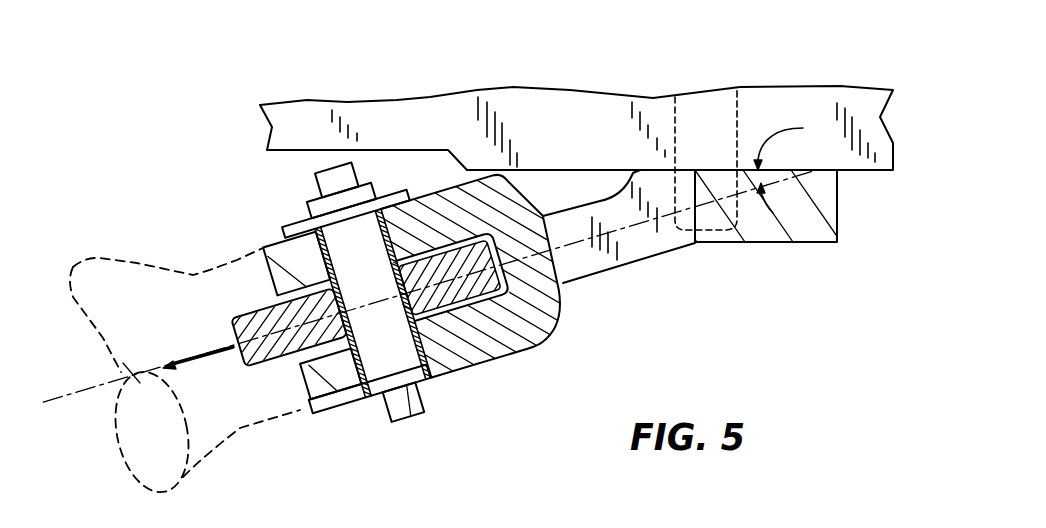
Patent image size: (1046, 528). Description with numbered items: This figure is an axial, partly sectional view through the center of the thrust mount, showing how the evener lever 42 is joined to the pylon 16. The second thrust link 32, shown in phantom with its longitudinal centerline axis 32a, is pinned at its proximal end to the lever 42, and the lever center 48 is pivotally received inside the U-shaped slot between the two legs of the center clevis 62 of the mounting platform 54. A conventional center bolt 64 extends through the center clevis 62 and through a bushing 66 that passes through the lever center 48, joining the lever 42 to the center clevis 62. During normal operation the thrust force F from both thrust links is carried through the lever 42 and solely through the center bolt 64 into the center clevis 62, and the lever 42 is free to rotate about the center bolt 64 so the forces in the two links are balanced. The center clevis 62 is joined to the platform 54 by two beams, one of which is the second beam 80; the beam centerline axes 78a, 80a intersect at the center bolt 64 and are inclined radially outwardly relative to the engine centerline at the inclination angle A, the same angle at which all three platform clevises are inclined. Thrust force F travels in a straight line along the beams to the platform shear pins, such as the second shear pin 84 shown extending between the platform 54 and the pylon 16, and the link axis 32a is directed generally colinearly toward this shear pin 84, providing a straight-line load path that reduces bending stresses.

The pylon 16 is at (352, 96).
The second platform shear pin 84 is at (737, 112).
The inclination angle A is at (790, 166).
The mounting platform 54 is at (810, 248).
The second beam 80 is at (658, 256).
The first beam centerline axis 78a is at (629, 273).
The second beam centerline axis 80a is at (581, 242).
The center clevis 62 is at (538, 351).
The bushing 66 is at (357, 380).
The center bolt 64 is at (311, 207).
The lever center 48 is at (308, 377).
The evener beam 42 is at (230, 361).
The thrust force F is at (200, 356).
The second thrust link 32 is at (137, 262).
The second thrust link centerline axis 32a is at (82, 396).